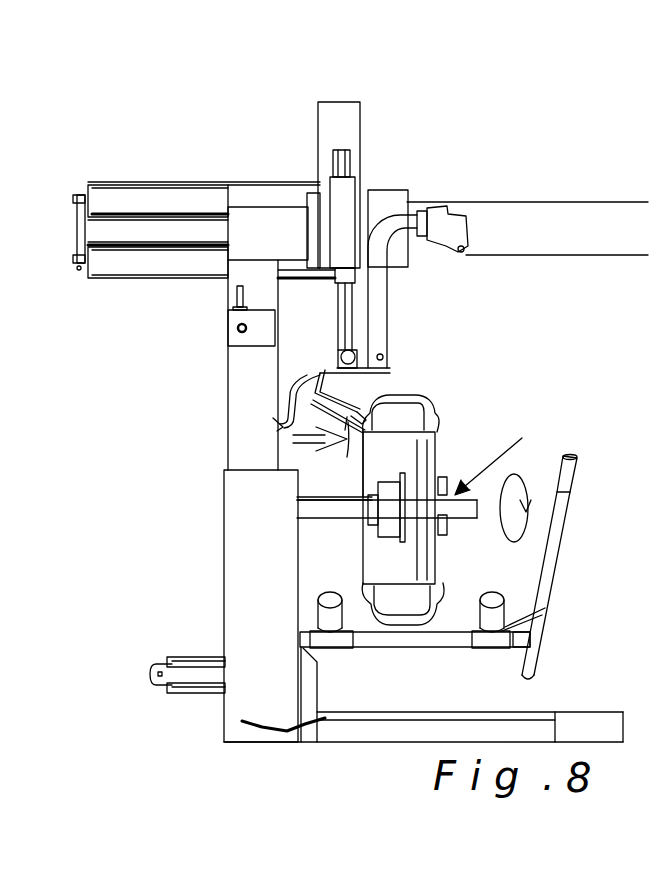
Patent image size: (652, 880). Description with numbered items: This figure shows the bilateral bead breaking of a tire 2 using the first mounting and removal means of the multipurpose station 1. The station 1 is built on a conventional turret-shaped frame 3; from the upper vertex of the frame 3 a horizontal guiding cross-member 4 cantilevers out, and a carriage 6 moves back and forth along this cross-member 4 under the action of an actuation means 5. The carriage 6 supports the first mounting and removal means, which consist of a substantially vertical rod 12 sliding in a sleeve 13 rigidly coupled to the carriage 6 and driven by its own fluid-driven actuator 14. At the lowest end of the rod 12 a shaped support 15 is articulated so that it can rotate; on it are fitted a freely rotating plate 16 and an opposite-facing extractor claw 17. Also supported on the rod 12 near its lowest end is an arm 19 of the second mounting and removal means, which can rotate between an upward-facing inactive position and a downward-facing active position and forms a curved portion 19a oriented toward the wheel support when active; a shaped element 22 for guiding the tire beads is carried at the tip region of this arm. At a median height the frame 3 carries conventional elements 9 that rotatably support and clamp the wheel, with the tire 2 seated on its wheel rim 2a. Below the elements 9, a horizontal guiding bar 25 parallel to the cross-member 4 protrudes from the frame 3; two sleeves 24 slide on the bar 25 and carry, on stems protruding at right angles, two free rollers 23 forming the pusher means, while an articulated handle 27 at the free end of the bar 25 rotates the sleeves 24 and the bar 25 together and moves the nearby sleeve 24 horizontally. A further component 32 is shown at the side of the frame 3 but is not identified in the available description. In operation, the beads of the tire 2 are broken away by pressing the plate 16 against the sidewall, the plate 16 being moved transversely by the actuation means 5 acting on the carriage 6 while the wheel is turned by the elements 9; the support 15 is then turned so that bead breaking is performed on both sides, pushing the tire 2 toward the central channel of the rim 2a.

The multipurpose station 1 is at (520, 92).
The tire 2 is at (423, 398).
The wheel rim 2a is at (402, 458).
The turret-shaped frame 3 is at (240, 508).
The horizontal guiding cross-member 4 is at (278, 230).
The actuation means 5 is at (186, 178).
The carriage 6 is at (393, 190).
The elements for rotatably supporting and clamping the wheels 9 is at (504, 477).
The vertical rod 12 is at (338, 156).
The sleeve 13 is at (347, 218).
The fluid-driven actuator 14 is at (340, 123).
The shaped support 15 is at (327, 386).
The freely rotating plate 16 is at (321, 460).
The extractor claw 17 is at (306, 372).
The arm 19 is at (390, 327).
The curved portion 19a is at (401, 224).
The shaped element 22 is at (463, 222).
The free rollers 23 is at (330, 593).
The sleeves 24 is at (335, 640).
The horizontal guiding bar 25 is at (405, 638).
The articulated handle 27 is at (558, 563).
The pedal 32 is at (185, 675).